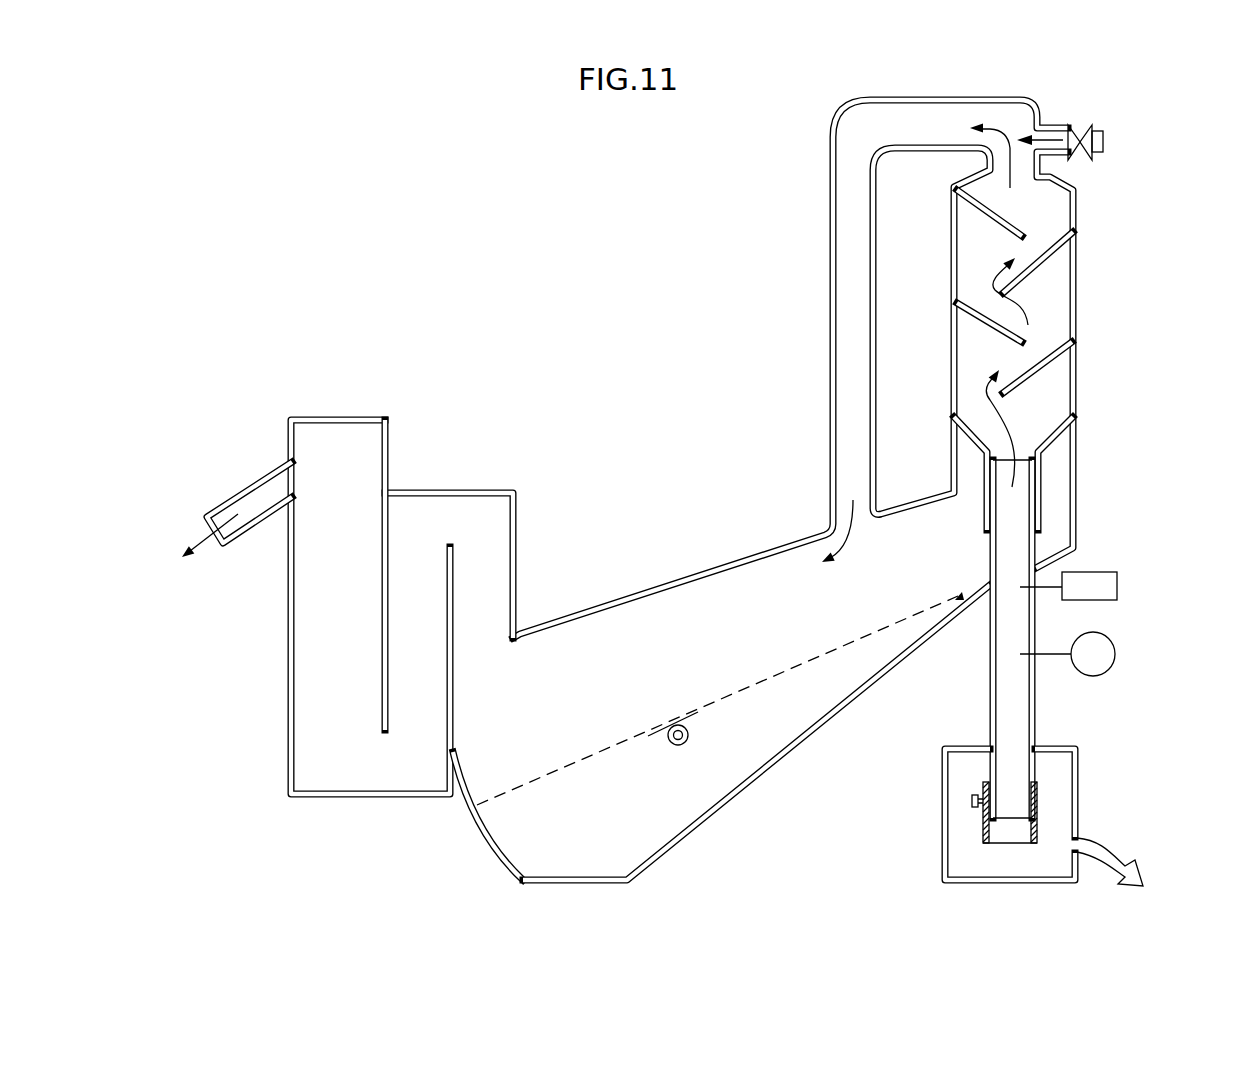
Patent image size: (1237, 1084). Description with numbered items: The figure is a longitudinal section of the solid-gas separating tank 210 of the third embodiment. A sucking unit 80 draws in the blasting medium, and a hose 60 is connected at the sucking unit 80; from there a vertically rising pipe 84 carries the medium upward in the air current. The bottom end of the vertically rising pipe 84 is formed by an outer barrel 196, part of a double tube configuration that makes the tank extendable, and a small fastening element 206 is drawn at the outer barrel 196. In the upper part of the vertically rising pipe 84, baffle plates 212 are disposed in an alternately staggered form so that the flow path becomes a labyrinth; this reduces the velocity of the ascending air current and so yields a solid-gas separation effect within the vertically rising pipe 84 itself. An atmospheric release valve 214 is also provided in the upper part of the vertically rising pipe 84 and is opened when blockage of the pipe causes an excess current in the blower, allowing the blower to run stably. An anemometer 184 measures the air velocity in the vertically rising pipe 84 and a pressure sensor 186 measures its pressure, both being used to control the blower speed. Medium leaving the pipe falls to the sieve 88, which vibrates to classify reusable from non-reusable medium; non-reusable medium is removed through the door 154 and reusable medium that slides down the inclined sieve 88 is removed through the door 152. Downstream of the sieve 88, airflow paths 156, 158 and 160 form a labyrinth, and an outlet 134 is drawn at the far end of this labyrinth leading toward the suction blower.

The solid-gas separating tank 210 is at (697, 452).
The baffle plate 212 is at (993, 217).
The atmospheric release valve 214 is at (1083, 125).
The outlet pipe 134 is at (230, 500).
The airflow path 158 is at (417, 590).
The airflow path 156 is at (512, 583).
The airflow path 160 is at (312, 637).
The door 152 is at (465, 803).
The outlet door 154 is at (588, 883).
The sieve 88 is at (757, 680).
The vertically rising pipe 84 is at (1035, 712).
The anemometer 184 is at (1105, 570).
The pressure sensor 186 is at (1115, 652).
The sucking unit 80 is at (1080, 790).
The screw 206 is at (965, 801).
The outer barrel 196 is at (980, 830).
The hose 60 is at (1123, 863).